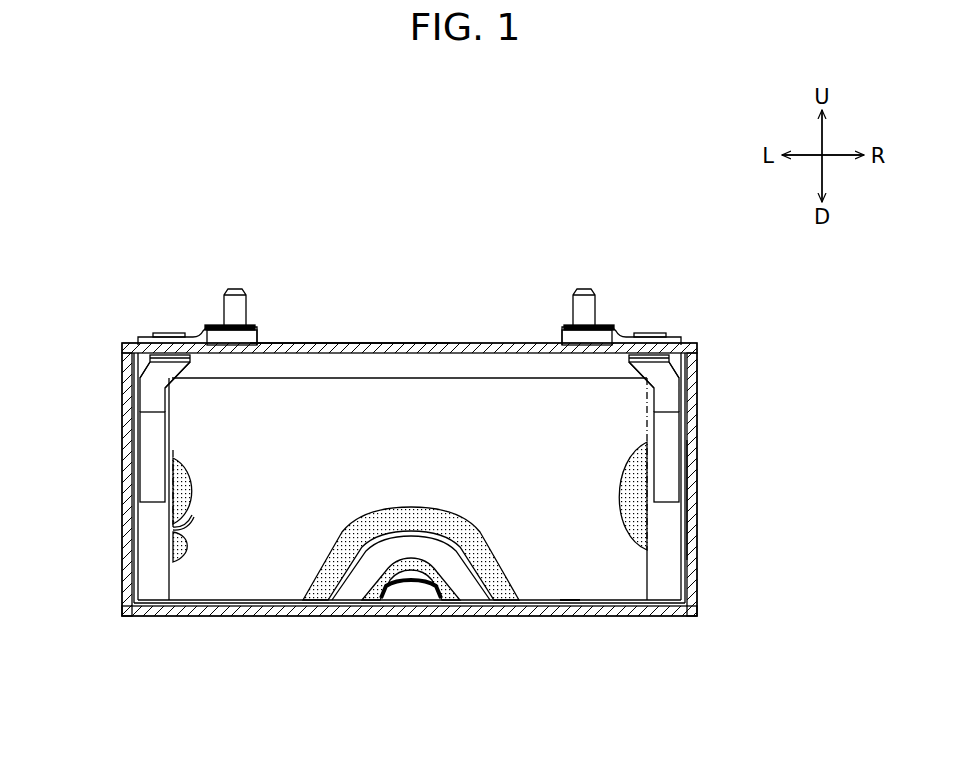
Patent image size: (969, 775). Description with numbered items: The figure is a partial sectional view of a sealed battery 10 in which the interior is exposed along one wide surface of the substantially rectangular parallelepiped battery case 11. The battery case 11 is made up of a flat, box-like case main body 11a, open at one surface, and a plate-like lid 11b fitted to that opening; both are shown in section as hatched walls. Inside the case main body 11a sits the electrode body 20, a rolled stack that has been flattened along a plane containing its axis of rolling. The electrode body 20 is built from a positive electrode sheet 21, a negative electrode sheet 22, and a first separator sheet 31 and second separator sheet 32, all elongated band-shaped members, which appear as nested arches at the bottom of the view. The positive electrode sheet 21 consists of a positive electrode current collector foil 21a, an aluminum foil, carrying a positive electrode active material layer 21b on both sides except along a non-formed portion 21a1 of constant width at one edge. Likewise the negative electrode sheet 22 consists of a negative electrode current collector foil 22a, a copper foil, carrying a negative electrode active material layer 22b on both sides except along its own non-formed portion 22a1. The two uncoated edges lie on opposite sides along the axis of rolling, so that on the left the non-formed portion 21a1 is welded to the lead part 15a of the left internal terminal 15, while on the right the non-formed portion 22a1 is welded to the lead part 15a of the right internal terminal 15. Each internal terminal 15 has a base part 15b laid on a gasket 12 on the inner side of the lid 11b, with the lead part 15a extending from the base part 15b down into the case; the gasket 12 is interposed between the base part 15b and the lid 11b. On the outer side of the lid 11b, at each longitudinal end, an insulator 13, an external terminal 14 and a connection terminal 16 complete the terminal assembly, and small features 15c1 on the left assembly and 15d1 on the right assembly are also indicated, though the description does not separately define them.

The sealed battery 10 is at (722, 290).
The battery case 11 is at (699, 400).
The case main body 11a is at (697, 500).
The lid 11b is at (342, 344).
The gasket 12 is at (150, 358).
The insulator 13 is at (138, 340).
The external terminal 14 is at (203, 328).
The internal terminal 15 is at (193, 363).
The lead part 15a is at (140, 470).
The base part 15b is at (170, 372).
The positive terminal tab 15c1 is at (168, 333).
The negative terminal tab 15d1 is at (650, 333).
The connection terminal 16 is at (236, 289).
The electrode body 20 is at (292, 377).
The positive electrode sheet 21 is at (372, 603).
The positive electrode current collector foil 21a is at (134, 546).
The non-formed portion 21a1 is at (150, 601).
The positive electrode active material layer 21b is at (190, 486).
The negative electrode sheet 22 is at (313, 603).
The negative electrode current collector foil 22a is at (685, 548).
The non-formed portion 22a1 is at (660, 601).
The negative electrode active material layer 22b is at (182, 546).
The first separator sheet 31 is at (188, 525).
The second separator sheet 32 is at (408, 603).